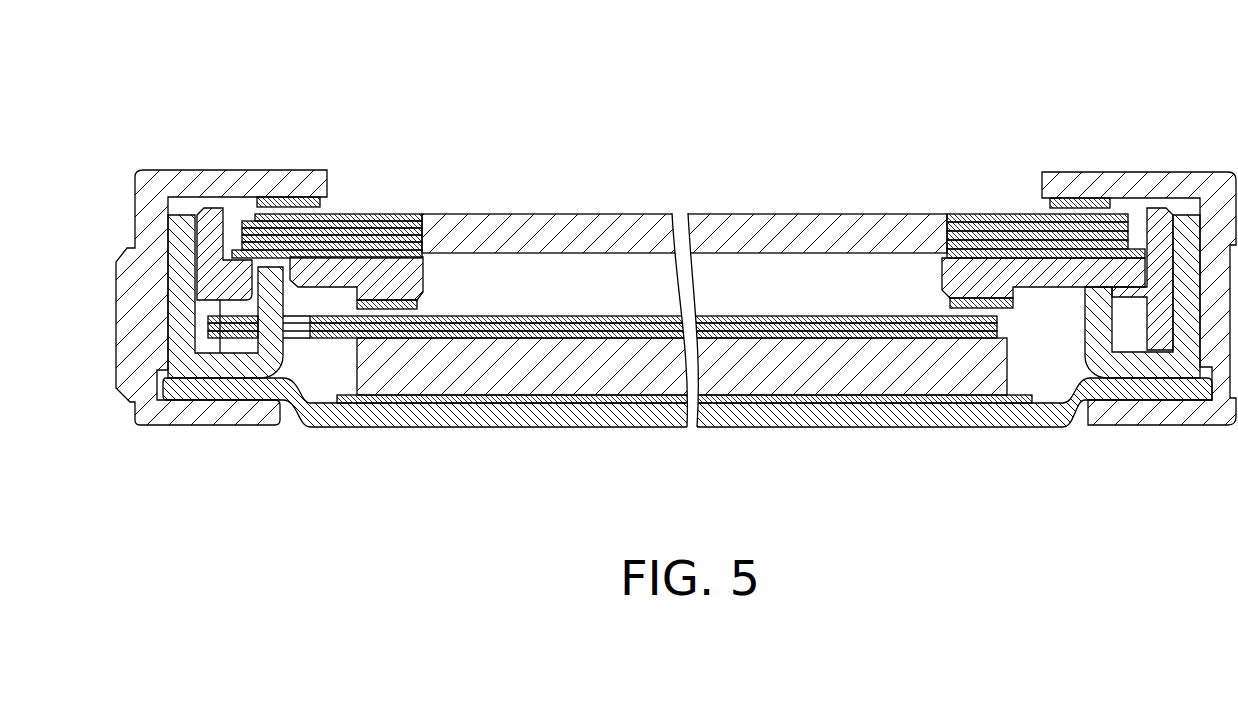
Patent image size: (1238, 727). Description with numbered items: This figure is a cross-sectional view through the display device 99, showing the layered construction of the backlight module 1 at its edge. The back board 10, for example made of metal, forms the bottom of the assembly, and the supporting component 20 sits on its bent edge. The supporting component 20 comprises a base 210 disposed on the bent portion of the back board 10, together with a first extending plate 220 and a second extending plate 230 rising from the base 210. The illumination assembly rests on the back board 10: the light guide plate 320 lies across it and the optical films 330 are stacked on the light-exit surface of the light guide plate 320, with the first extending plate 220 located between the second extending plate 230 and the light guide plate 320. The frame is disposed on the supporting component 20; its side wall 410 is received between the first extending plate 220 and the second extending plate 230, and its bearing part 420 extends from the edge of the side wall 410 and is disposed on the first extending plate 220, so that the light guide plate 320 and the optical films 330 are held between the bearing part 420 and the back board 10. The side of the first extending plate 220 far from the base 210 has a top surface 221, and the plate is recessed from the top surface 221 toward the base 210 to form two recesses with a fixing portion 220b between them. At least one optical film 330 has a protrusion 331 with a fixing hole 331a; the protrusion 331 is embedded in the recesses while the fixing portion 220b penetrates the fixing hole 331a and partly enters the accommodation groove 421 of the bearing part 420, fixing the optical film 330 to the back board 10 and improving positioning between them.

The display device 99 is at (171, 45).
The backlight module 1 is at (412, 440).
The back board 10 is at (574, 415).
The supporting component 20 is at (291, 495).
The base 210 is at (213, 362).
The first extending plate 220 is at (270, 350).
The fixing portion 220b is at (345, 255).
The top surface 221 is at (280, 220).
The second extending plate 230 is at (182, 310).
The light guide plate 320 is at (500, 360).
The optical films 330 is at (568, 316).
The protrusion 331 is at (302, 333).
The fixing hole 331a is at (289, 285).
The side wall 410 is at (210, 228).
The bearing part 420 is at (423, 267).
The accommodation groove 421 is at (250, 248).